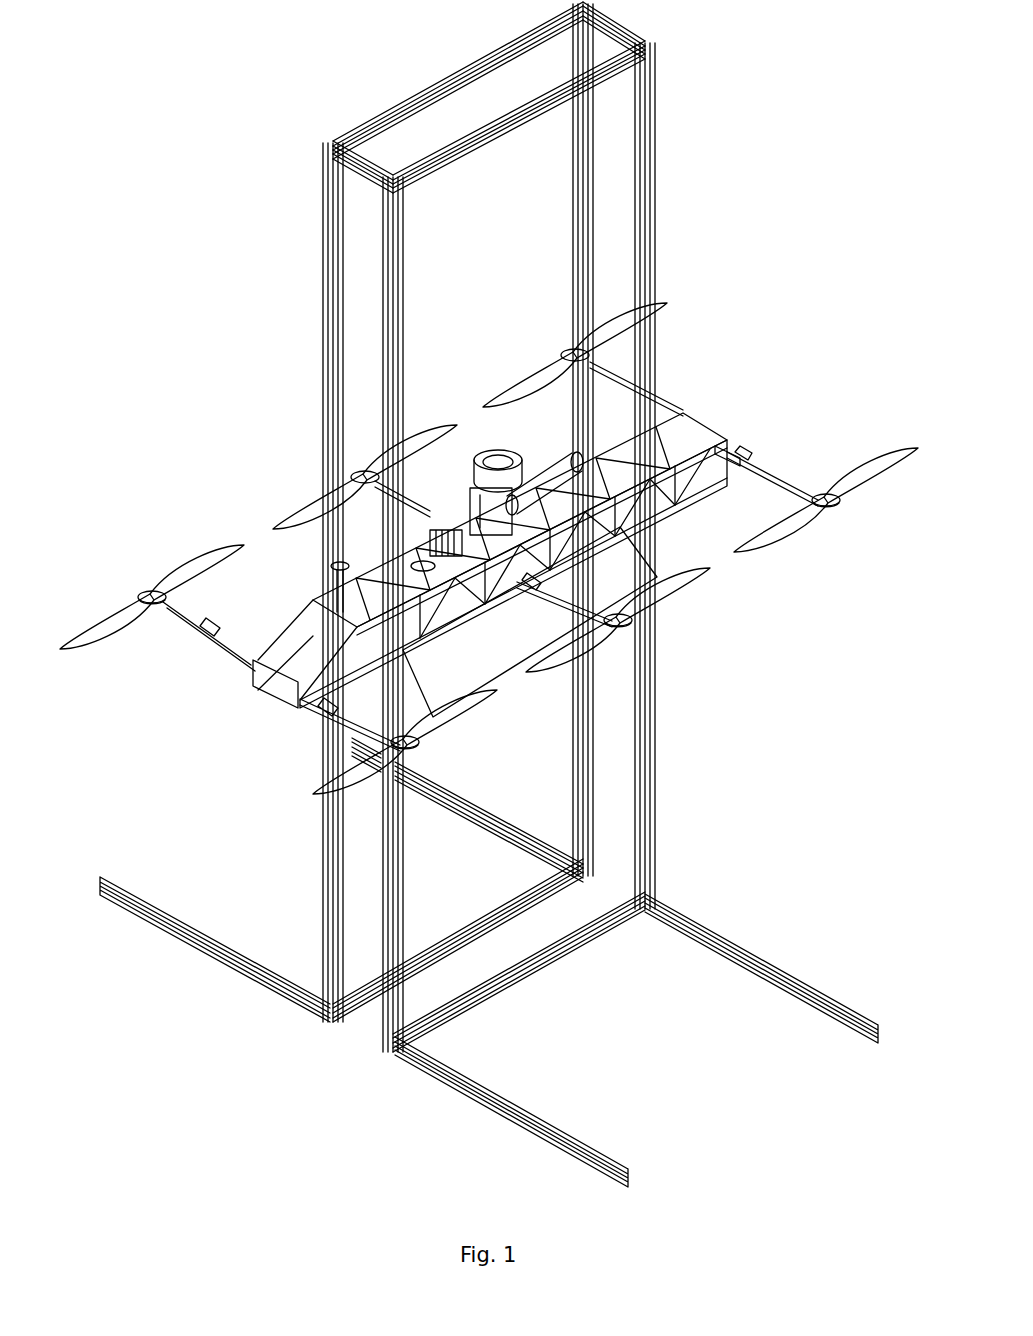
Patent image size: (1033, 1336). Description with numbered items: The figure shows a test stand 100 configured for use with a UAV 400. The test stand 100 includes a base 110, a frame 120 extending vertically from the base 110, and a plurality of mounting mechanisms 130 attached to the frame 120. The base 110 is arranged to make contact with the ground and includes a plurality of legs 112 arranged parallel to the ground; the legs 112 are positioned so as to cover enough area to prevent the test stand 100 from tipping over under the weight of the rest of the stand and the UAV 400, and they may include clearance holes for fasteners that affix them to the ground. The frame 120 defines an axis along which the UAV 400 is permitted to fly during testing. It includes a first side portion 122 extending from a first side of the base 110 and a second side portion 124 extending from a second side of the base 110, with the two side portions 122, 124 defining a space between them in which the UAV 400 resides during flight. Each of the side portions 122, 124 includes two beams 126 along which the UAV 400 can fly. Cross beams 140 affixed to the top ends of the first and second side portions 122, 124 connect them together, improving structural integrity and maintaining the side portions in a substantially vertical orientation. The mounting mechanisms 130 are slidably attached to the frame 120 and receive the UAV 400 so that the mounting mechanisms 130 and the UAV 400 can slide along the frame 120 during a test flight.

The test stand 100 is at (158, 48).
The base 110 is at (681, 1134).
The legs 112 is at (172, 934).
The frame 120 is at (698, 808).
The first side portion 122 is at (292, 334).
The second side portion 124 is at (686, 210).
The beams 126 is at (592, 147).
The mounting mechanisms 130 is at (291, 578).
The cross beams 140 is at (397, 105).
The UAV 400 is at (736, 367).